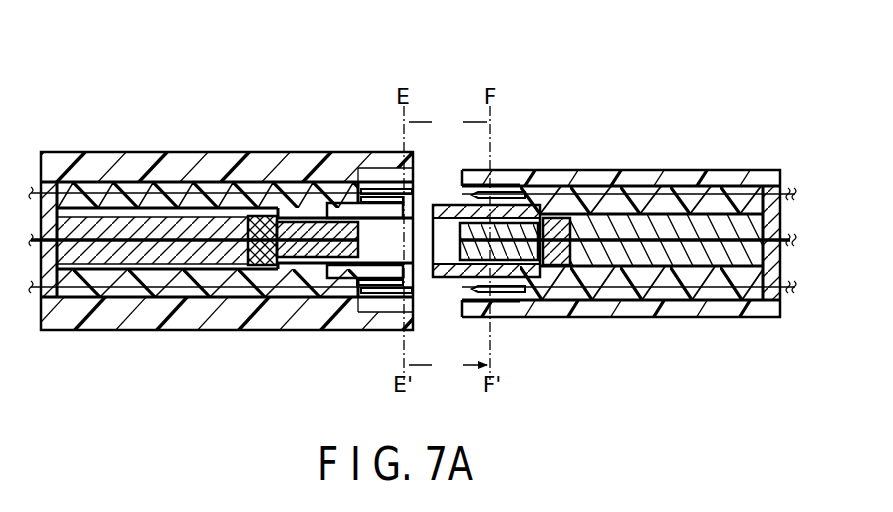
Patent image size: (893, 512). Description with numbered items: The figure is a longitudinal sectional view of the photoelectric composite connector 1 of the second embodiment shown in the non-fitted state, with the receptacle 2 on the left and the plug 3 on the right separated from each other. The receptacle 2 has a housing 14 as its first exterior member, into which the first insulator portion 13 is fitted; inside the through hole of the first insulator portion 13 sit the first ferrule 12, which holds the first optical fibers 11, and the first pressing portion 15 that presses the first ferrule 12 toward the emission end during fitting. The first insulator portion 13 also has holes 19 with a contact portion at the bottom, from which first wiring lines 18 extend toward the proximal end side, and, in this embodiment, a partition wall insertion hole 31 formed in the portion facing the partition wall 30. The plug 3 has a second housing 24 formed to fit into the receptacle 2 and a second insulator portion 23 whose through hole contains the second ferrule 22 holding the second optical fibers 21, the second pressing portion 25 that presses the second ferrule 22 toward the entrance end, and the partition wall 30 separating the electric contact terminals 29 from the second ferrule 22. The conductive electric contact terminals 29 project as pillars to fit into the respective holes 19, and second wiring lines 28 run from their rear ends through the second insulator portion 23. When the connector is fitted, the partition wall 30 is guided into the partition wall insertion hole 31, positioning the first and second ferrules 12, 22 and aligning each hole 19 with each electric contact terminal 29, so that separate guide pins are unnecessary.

The photoelectric composite connector 1 is at (434, 76).
The receptacle 2 is at (261, 100).
The plug 3 is at (604, 100).
The first optical fibers 11 is at (63, 248).
The first ferrule 12 is at (293, 222).
The first insulator portion 13 is at (223, 203).
The housing 14 is at (167, 168).
The first pressing portion 15 is at (112, 225).
The first wiring line 18 is at (348, 187).
The hole 19 is at (398, 192).
The second optical fibers 21 is at (770, 300).
The second ferrule 22 is at (575, 227).
The second insulator portion 23 is at (560, 198).
The second housing 24 is at (633, 178).
The second pressing portion 25 is at (683, 232).
The second wiring lines 28 is at (737, 178).
The electric contact terminals 29 is at (507, 192).
The partition wall 30 is at (460, 190).
The partition wall insertion hole 31 is at (352, 205).